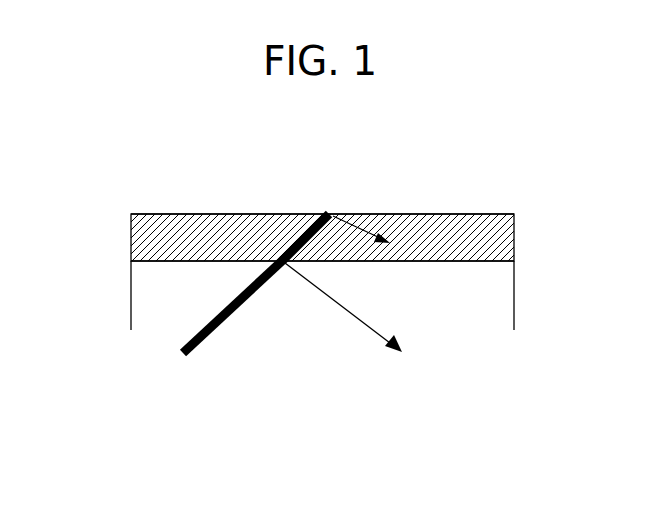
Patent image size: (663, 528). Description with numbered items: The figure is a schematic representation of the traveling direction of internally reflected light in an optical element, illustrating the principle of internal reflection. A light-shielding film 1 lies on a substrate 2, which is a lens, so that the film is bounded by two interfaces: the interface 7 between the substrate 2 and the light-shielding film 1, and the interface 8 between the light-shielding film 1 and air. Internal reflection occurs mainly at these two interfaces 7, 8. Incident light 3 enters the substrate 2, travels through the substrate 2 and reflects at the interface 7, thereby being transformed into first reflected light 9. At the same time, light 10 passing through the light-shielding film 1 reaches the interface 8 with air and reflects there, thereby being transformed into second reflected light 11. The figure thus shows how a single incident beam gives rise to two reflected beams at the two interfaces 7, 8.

The light-shielding film 1 is at (504, 232).
The substrate 2 is at (500, 306).
The incident light 3 is at (203, 343).
The interface 7 is at (138, 261).
The interface 8 is at (140, 214).
The first reflected light 9 is at (352, 318).
The light passing through the light-shielding film 10 is at (297, 243).
The second reflected light 11 is at (355, 223).